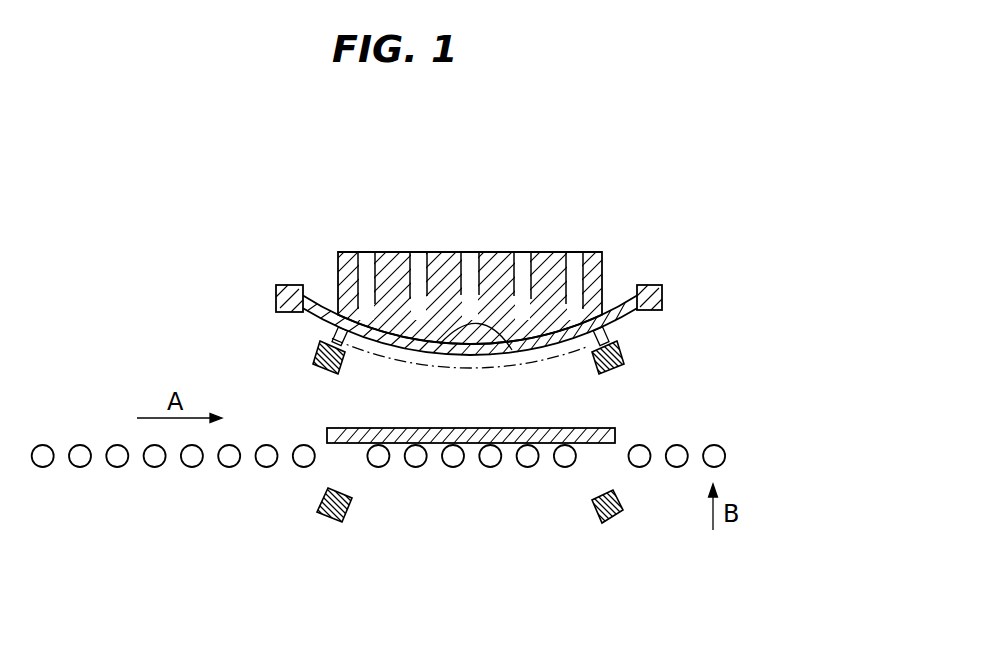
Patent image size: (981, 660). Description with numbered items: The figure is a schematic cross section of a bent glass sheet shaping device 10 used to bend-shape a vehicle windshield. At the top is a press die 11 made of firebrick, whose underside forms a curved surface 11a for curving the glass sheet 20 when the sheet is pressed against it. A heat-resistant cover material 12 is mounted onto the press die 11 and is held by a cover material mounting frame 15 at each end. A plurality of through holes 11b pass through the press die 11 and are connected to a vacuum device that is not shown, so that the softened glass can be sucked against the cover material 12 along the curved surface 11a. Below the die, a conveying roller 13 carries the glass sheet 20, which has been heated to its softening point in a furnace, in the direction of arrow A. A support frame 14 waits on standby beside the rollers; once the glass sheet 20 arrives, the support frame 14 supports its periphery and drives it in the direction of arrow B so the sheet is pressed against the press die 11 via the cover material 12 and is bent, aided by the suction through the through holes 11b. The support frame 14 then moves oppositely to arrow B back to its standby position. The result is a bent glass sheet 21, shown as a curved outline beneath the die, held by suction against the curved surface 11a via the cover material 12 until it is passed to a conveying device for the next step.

The bent glass sheet shaping device 10 is at (678, 155).
The press die 11 is at (473, 254).
The curved surface 11a is at (512, 350).
The through holes 11b is at (363, 252).
The heat-resistant cover material 12 is at (622, 322).
The conveying roller 13 is at (80, 462).
The support frame 14 is at (615, 366).
The cover material mounting frame 15 is at (650, 285).
The glass sheet 20 is at (615, 428).
The bent glass sheet 21 is at (332, 336).